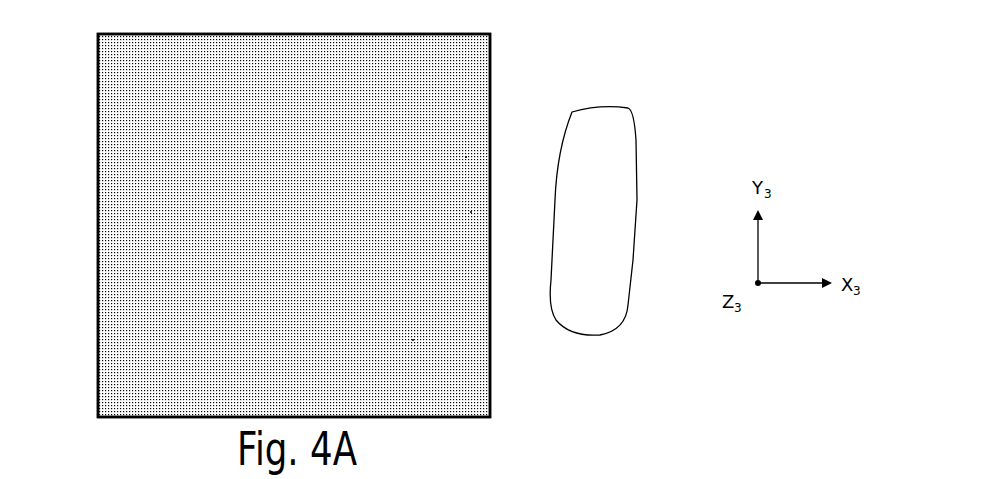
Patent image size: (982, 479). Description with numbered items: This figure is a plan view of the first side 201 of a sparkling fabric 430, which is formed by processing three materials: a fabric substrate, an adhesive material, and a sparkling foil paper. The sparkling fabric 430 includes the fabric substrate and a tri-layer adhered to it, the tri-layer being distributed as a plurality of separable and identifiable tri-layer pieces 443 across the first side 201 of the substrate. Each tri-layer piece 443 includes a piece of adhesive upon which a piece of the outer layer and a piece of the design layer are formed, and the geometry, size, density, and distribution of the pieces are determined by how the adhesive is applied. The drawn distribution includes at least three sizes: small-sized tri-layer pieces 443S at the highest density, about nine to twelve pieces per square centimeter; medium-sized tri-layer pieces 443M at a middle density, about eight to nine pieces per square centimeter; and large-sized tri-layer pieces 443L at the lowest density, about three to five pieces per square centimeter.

The sparkling fabric 430 is at (54, 228).
The first side 201 is at (478, 93).
The tri-layer pieces 443 is at (638, 150).
The small-sized tri-layer pieces 443S is at (465, 157).
The medium-sized tri-layer pieces 443M is at (470, 212).
The large-sized tri-layer pieces 443L is at (412, 340).